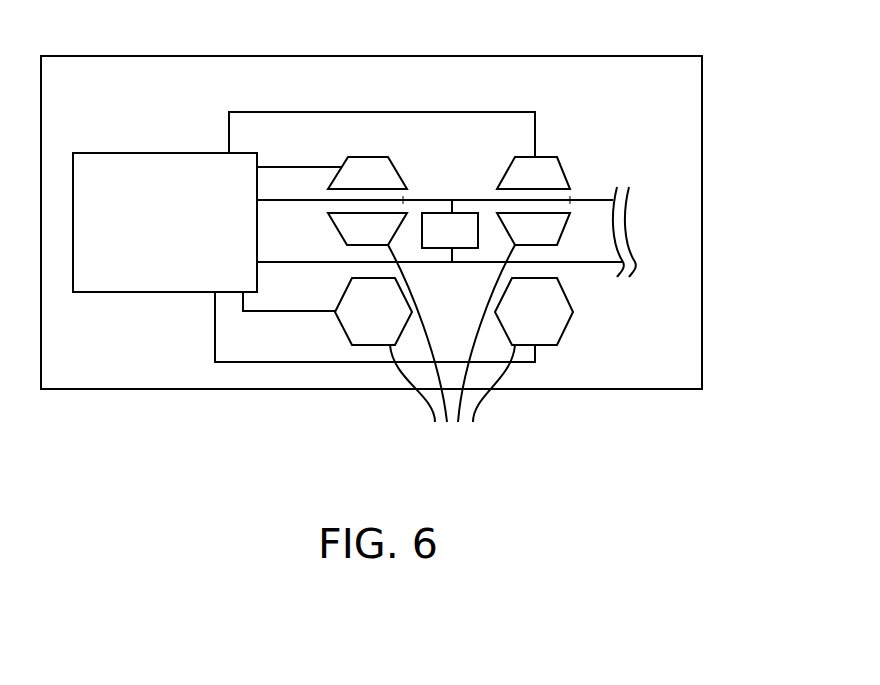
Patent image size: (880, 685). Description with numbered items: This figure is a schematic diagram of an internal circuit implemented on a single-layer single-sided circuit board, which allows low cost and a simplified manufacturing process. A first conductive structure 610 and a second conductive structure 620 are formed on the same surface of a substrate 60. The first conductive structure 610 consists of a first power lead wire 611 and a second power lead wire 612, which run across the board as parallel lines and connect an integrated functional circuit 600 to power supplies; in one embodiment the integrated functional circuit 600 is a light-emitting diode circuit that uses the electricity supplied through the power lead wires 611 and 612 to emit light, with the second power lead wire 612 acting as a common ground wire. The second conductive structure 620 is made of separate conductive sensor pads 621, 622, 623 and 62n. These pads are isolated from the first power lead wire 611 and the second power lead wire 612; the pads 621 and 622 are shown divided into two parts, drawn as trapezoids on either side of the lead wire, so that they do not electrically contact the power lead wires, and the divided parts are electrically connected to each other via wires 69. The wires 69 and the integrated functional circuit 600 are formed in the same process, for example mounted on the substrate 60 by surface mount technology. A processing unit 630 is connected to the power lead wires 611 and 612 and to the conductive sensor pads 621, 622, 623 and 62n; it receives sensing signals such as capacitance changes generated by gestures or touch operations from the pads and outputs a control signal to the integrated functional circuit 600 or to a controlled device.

The substrate 60 is at (466, 70).
The processing unit 630 is at (158, 153).
The first conductive structure 610 is at (692, 157).
The first power lead wire 611 is at (590, 200).
The second power lead wire 612 is at (590, 262).
The conductive sensor pad 621 is at (367, 201).
The conductive sensor pad 622 is at (533, 201).
The wires 69 is at (402, 202).
The integrated functional circuit 600 is at (450, 231).
The conductive sensor pad 62n is at (373, 311).
The conductive sensor pad 623 is at (534, 311).
The second conductive structure 620 is at (451, 354).